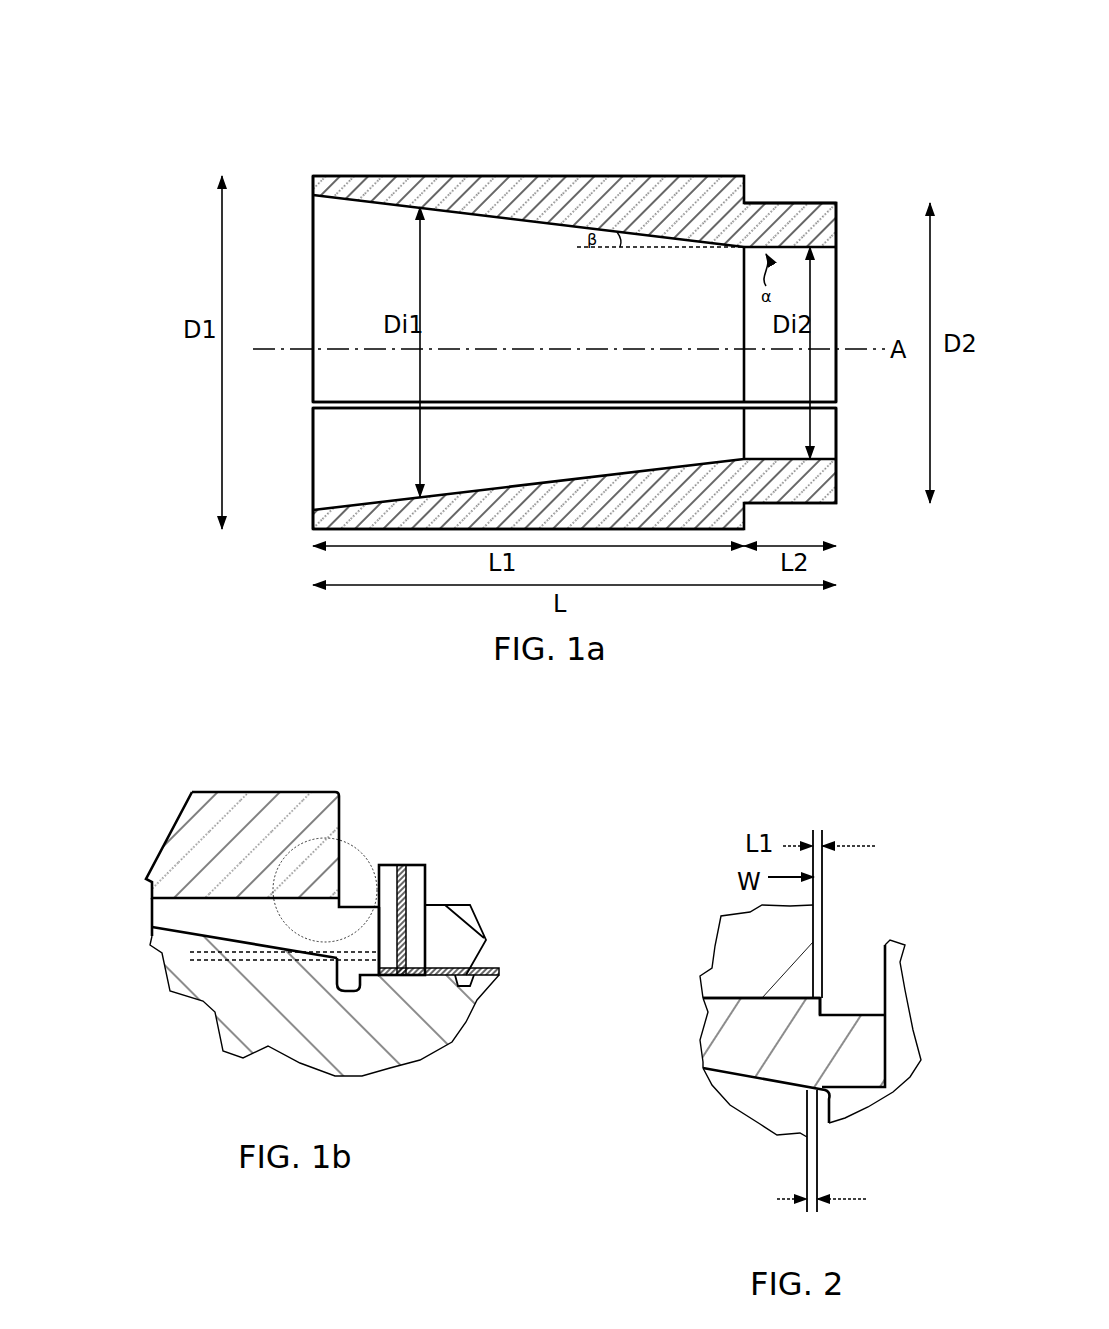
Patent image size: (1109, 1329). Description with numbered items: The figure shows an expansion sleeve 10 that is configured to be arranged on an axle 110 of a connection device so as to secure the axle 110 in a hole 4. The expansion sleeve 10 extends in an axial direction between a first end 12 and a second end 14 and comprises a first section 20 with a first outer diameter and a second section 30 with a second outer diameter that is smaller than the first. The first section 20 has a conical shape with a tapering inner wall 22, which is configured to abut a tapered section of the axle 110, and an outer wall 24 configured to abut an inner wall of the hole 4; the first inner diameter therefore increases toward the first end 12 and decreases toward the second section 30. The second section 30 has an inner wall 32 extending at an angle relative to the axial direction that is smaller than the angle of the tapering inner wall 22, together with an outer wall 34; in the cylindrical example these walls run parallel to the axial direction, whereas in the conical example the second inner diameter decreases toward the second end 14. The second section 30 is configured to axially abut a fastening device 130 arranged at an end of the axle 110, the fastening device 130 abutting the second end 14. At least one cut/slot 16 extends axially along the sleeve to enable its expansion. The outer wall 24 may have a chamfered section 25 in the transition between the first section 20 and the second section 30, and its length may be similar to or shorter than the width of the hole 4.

In FIG. 1a, the expansion sleeve 10 is at (279, 154).
In FIG. 1b, the expansion sleeve 10 is at (169, 789).
In FIG. 2, the expansion sleeve 10 is at (703, 859).
In FIG. 1a, the first end 12 is at (289, 311).
In FIG. 1a, the second end 14 is at (856, 394).
In FIG. 1a, the cut/slot 16 is at (325, 409).
In FIG. 1a, the first section 20 is at (388, 156).
In FIG. 1a, the tapering inner wall 22 is at (497, 219).
In FIG. 2, the tapering inner wall 22 is at (770, 1089).
In FIG. 1a, the outer wall 24 is at (550, 176).
In FIG. 2, the outer wall 24 is at (740, 998).
In FIG. 2, the chamfered section 25 is at (823, 1002).
In FIG. 1a, the second section 30 is at (824, 190).
In FIG. 1b, the second section 30 is at (352, 896).
In FIG. 1a, the inner wall 32 is at (790, 458).
In FIG. 1a, the outer wall 34 is at (782, 203).
In FIG. 1b, the hole 4 is at (141, 898).
In FIG. 1b, the axle 110 is at (183, 946).
In FIG. 2, the axle 110 is at (728, 1089).
In FIG. 1b, the fastening device 130 is at (433, 859).